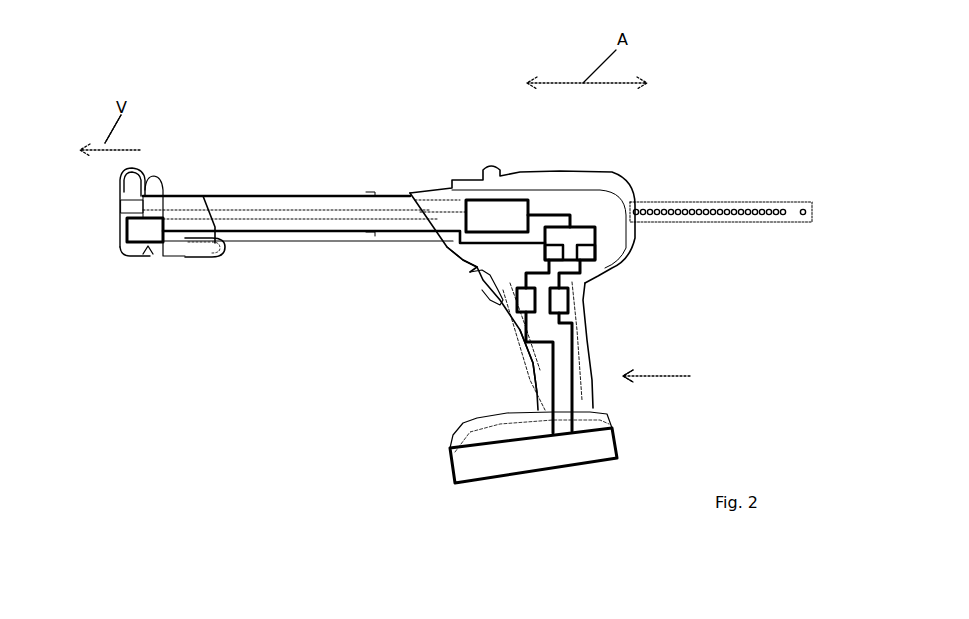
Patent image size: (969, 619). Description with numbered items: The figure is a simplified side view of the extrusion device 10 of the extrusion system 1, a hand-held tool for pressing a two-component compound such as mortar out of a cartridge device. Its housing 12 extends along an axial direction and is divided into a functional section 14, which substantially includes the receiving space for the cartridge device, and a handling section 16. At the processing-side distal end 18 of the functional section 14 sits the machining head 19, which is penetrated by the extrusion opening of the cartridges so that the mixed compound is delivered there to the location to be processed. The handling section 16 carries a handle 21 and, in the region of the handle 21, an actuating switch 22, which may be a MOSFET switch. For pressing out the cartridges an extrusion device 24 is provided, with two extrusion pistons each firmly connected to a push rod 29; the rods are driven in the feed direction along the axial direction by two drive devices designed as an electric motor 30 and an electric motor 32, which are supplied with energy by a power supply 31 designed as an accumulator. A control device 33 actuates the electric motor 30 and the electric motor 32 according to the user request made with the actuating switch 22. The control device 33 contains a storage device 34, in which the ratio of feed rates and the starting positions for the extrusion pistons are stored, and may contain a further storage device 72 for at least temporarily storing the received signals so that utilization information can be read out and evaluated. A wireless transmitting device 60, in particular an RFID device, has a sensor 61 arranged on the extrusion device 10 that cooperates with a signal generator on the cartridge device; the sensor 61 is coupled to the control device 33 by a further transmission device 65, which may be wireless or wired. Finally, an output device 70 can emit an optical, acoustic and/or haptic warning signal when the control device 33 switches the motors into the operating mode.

The extrusion system 1 is at (784, 118).
The extrusion device 10 is at (433, 133).
The housing 12 is at (590, 359).
The functional section 14 is at (274, 164).
The handling section 16 is at (667, 379).
The processing-side distal end 18 is at (162, 199).
The machining head 19 is at (137, 205).
The handle 21 is at (530, 357).
The actuating switch 22 is at (493, 287).
The extrusion device 24 is at (668, 198).
The push rod 29 is at (749, 212).
The electric motor 30 is at (568, 302).
The power supply 31 is at (605, 445).
The electric motor 32 is at (517, 305).
The control device 33 is at (583, 238).
The storage device 34 is at (467, 264).
The transmitting device 60 is at (153, 254).
The sensor 61 is at (124, 243).
The further transmission device 65 is at (270, 236).
The output device 70 is at (497, 212).
The further storage device 72 is at (595, 257).